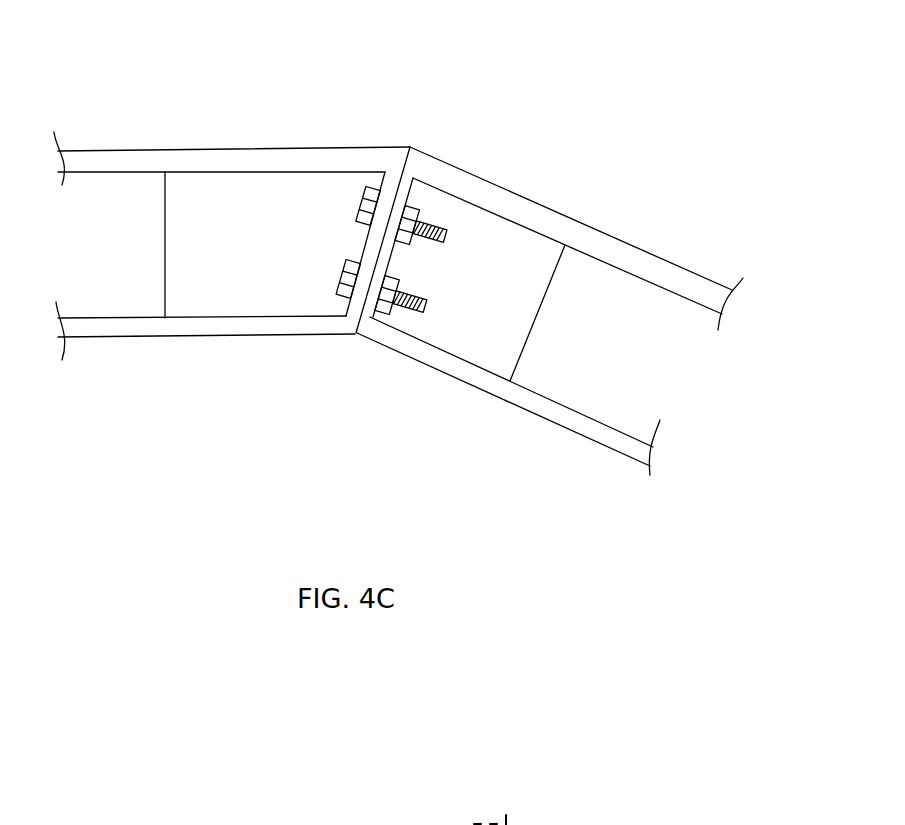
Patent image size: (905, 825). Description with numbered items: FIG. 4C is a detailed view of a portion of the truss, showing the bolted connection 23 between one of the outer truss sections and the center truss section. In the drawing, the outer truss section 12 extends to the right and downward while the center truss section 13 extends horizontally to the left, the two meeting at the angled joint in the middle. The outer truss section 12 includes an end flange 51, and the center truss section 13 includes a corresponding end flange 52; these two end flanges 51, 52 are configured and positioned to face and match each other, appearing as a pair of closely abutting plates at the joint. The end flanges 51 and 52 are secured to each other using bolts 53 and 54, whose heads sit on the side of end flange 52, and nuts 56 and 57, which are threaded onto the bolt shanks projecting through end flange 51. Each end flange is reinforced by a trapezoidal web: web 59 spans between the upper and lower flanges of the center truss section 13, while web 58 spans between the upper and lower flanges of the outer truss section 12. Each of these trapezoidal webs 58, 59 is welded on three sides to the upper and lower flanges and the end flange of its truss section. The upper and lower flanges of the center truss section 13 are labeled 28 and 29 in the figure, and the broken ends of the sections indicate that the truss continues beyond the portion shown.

The outer truss section 12 is at (585, 197).
The center truss section 13 is at (283, 122).
The bolted connection 23 is at (431, 121).
The upper wall of first rail section 28 is at (118, 162).
The lower wall of first rail section 29 is at (145, 337).
The end flange 51 is at (367, 333).
The end flange 52 is at (347, 330).
The bolt 53 is at (360, 208).
The bolt 54 is at (340, 287).
The nut 56 is at (427, 208).
The nut 57 is at (401, 277).
The trapezoidal web 58 is at (523, 347).
The trapezoidal web 59 is at (197, 240).